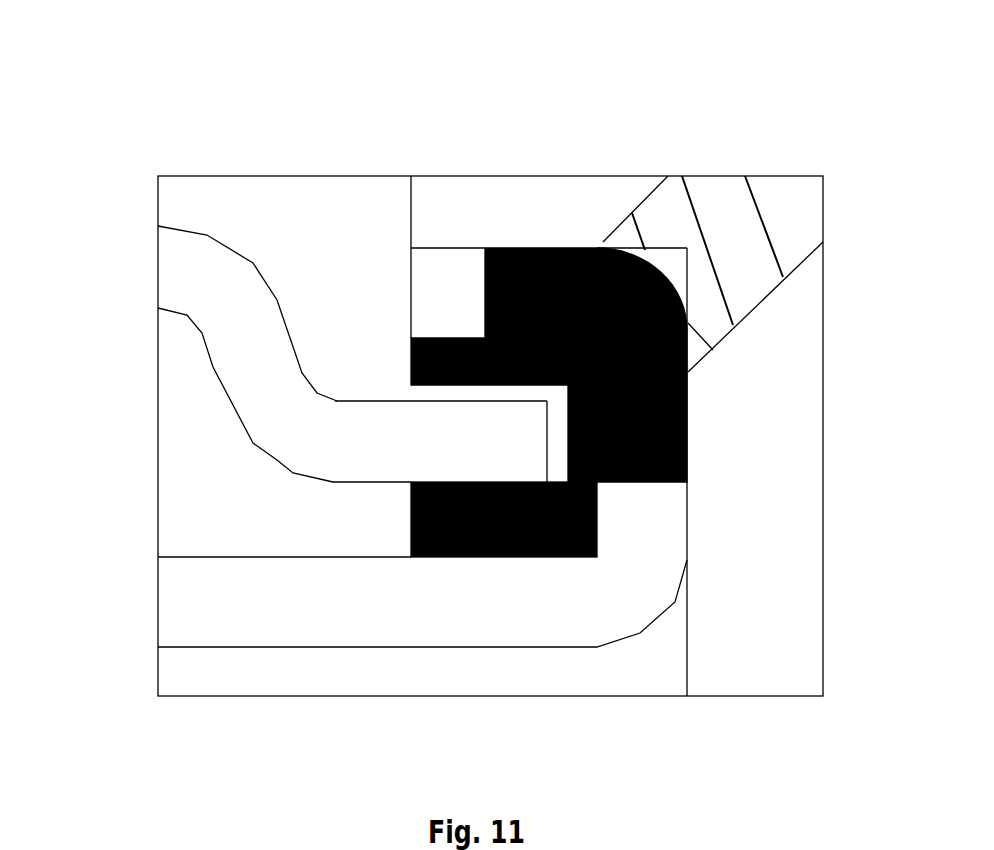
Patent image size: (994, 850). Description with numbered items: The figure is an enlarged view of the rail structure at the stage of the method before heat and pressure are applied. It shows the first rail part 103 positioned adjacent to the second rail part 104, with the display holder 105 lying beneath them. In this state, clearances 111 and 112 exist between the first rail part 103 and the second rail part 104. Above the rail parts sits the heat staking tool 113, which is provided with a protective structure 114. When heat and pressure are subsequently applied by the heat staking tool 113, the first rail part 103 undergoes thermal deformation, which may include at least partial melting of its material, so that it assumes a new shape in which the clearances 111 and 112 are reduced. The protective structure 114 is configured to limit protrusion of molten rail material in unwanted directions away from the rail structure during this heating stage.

The first rail part 103 is at (508, 527).
The second rail part 104 is at (368, 425).
The display holder 105 is at (275, 612).
The clearance 111 is at (557, 448).
The clearance 112 is at (460, 391).
The heat staking tool 113 is at (742, 200).
The protective structure 114 is at (503, 205).